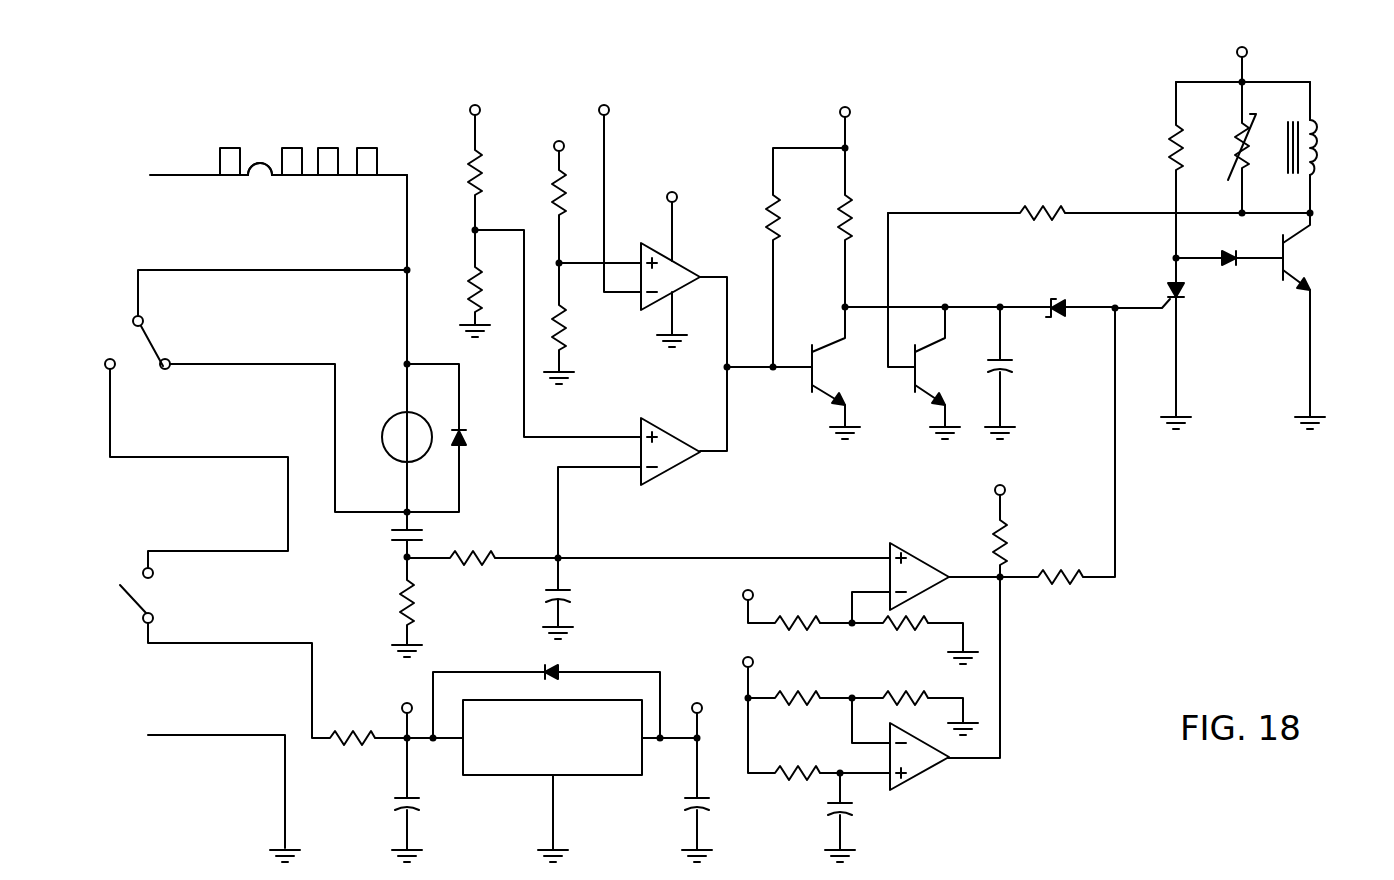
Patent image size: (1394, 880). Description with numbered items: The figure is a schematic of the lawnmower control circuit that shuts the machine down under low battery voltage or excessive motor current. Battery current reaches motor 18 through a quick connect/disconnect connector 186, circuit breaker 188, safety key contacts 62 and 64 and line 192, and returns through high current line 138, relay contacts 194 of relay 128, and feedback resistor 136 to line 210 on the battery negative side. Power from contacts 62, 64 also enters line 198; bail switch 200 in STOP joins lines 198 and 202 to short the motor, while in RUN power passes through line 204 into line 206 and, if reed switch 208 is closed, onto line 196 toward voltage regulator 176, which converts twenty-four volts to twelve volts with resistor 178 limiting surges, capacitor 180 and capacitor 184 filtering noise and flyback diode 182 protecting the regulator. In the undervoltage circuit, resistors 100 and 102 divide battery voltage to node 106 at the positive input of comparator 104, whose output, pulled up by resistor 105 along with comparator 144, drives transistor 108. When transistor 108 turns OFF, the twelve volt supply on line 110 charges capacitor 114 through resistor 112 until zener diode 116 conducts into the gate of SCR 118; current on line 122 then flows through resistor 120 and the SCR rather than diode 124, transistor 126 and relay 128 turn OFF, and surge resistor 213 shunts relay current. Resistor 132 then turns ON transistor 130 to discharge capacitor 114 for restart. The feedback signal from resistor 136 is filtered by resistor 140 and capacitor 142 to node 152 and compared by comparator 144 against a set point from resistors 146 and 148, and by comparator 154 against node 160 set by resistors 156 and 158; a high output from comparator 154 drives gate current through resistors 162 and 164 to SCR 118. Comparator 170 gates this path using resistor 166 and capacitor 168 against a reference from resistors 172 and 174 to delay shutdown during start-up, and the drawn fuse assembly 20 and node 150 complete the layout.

The motor 18 is at (428, 428).
The fuse and connector assembly 20 is at (296, 94).
The safety key contact 62 is at (326, 147).
The safety key contact 64 is at (366, 147).
The resistor 100 is at (563, 333).
The resistor 102 is at (554, 194).
The comparator 104 is at (688, 270).
The pull-up resistor 105 is at (780, 212).
The node 106 is at (556, 262).
The transistor 108 is at (810, 386).
The line 110 is at (850, 140).
The resistor 112 is at (851, 212).
The capacitor 114 is at (1021, 365).
The zener diode 116 is at (1048, 300).
The SCR 118 is at (1184, 297).
The resistor 120 is at (1172, 155).
The line 122 is at (1238, 78).
The diode 124 is at (1228, 252).
The transistor 126 is at (1296, 260).
The relay 128 is at (1318, 160).
The transistor 130 is at (919, 362).
The resistor 132 is at (1032, 212).
The feedback resistor 136 is at (404, 606).
The high current line 138 is at (404, 490).
The resistor 140 is at (478, 556).
The capacitor 142 is at (548, 600).
The comparator 144 is at (672, 478).
The resistor 146 is at (468, 170).
The resistor 148 is at (467, 290).
The junction 150 is at (470, 232).
The node 152 is at (562, 557).
The comparator 154 is at (918, 550).
The resistor 156 is at (786, 620).
The resistor 158 is at (921, 622).
The node 160 is at (852, 630).
The resistor 162 is at (1010, 556).
The resistor 164 is at (1052, 583).
The resistor 166 is at (809, 781).
The capacitor 168 is at (862, 816).
The comparator 170 is at (926, 780).
The resistor 172 is at (785, 697).
The resistor 174 is at (890, 697).
The voltage regulator 176 is at (526, 778).
The resistor 178 is at (362, 745).
The capacitor 180 is at (395, 805).
The flyback diode 182 is at (553, 668).
The capacitor 184 is at (686, 805).
The quick connect/disconnect connector 186 is at (166, 180).
The circuit breaker 188 is at (261, 158).
The line 192 is at (406, 338).
The relay contacts 194 is at (392, 532).
The line 196 is at (172, 645).
The line 198 is at (137, 290).
The bail switch 200 is at (149, 332).
The line 202 is at (186, 366).
The line 204 is at (112, 398).
The line 206 is at (146, 554).
The reed switch 208 is at (148, 605).
The line 210 is at (176, 733).
The surge resistor 213 is at (1232, 140).